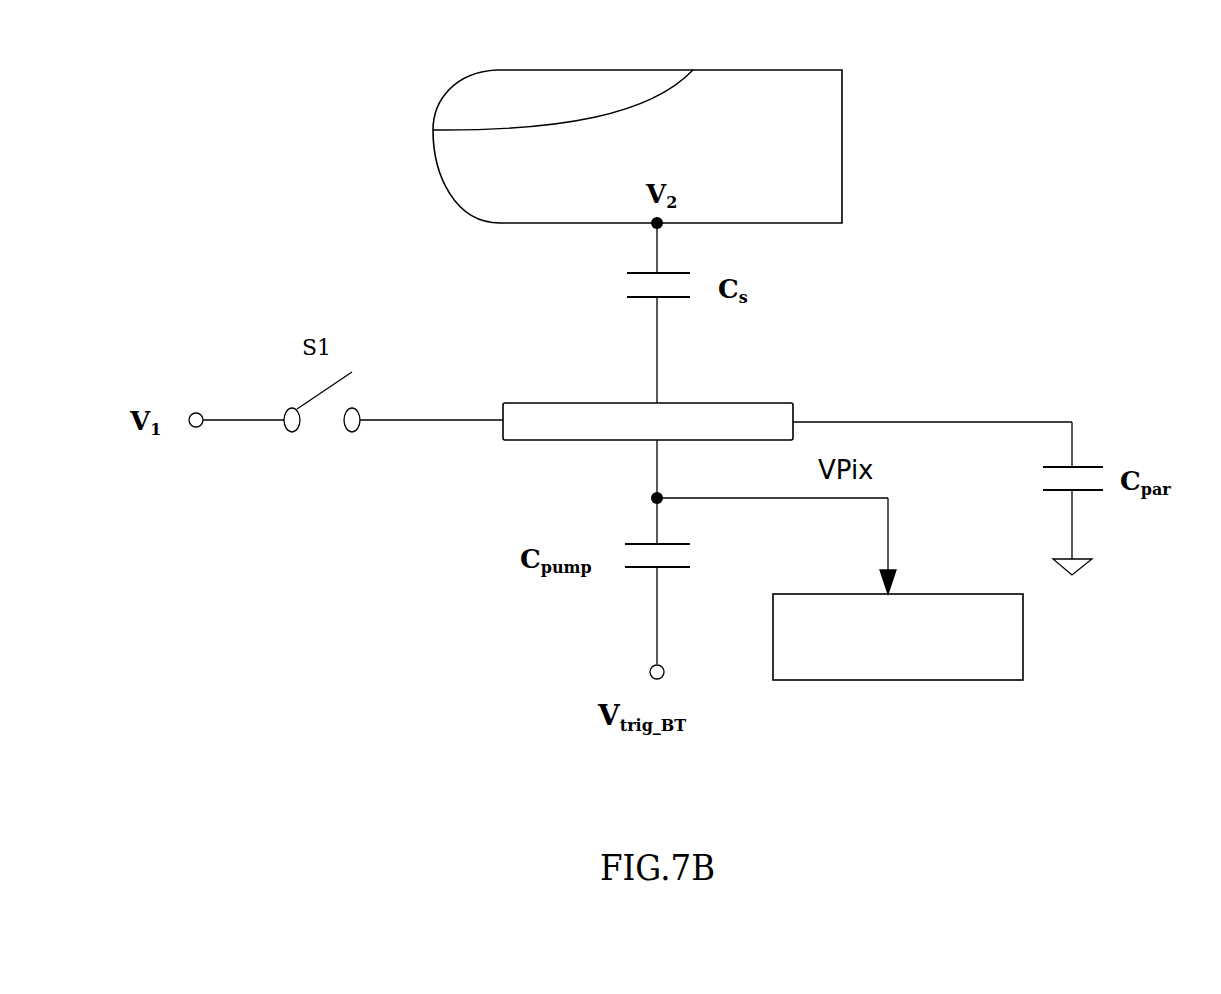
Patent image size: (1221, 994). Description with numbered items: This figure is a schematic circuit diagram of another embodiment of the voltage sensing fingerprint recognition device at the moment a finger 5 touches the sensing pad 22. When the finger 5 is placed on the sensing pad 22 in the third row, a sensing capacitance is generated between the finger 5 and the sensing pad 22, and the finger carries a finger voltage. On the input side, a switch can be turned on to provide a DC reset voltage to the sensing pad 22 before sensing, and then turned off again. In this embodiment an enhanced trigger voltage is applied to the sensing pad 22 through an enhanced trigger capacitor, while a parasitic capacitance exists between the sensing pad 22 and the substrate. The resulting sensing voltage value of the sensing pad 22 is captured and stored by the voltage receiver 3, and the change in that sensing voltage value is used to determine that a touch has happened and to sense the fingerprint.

The finger 5 is at (838, 155).
The sensing pad 22 is at (745, 415).
The voltage receiver 3 is at (1012, 646).